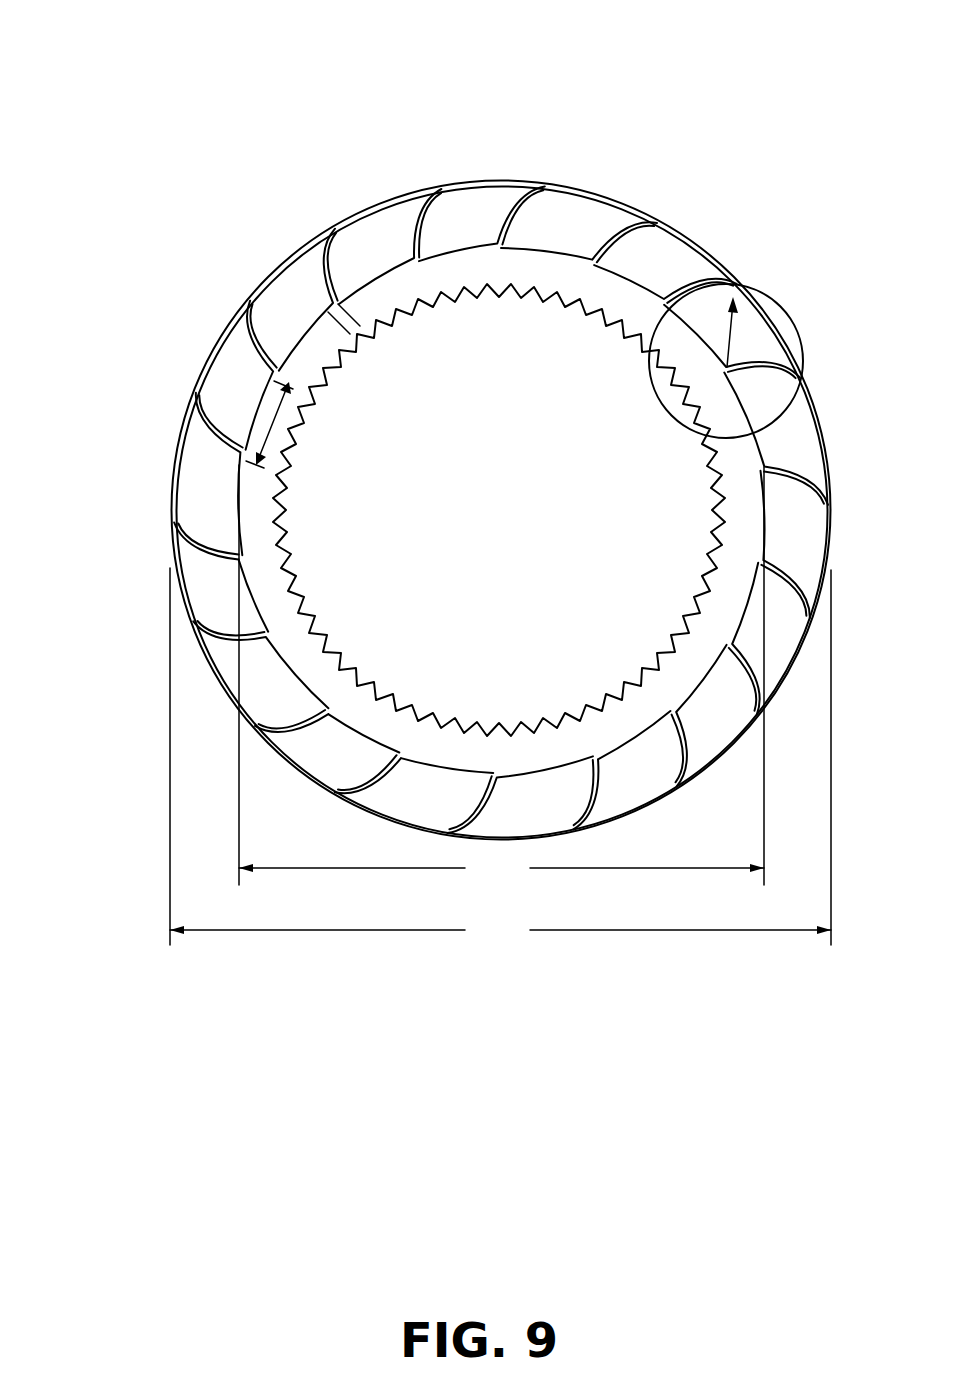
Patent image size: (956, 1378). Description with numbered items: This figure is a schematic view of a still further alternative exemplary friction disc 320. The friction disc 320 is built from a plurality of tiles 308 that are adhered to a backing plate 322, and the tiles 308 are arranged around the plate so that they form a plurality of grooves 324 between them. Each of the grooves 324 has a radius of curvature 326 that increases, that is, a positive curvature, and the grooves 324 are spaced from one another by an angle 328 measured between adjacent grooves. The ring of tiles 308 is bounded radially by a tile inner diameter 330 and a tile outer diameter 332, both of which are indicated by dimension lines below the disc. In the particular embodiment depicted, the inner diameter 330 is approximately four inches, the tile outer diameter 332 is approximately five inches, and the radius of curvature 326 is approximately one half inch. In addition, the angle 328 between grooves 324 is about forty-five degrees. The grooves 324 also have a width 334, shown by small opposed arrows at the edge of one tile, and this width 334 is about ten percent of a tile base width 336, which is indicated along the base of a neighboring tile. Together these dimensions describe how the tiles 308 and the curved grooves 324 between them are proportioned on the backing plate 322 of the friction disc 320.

The tiles 308 is at (290, 285).
The friction disc 320 is at (313, 150).
The backing plate 322 is at (474, 263).
The grooves 324 is at (408, 213).
The radius of curvature 326 is at (736, 342).
The angle 328 is at (417, 250).
The tile inner diameter 330 is at (501, 675).
The tile outer diameter 332 is at (500, 757).
The width 334 is at (343, 318).
The tile base width 336 is at (287, 422).